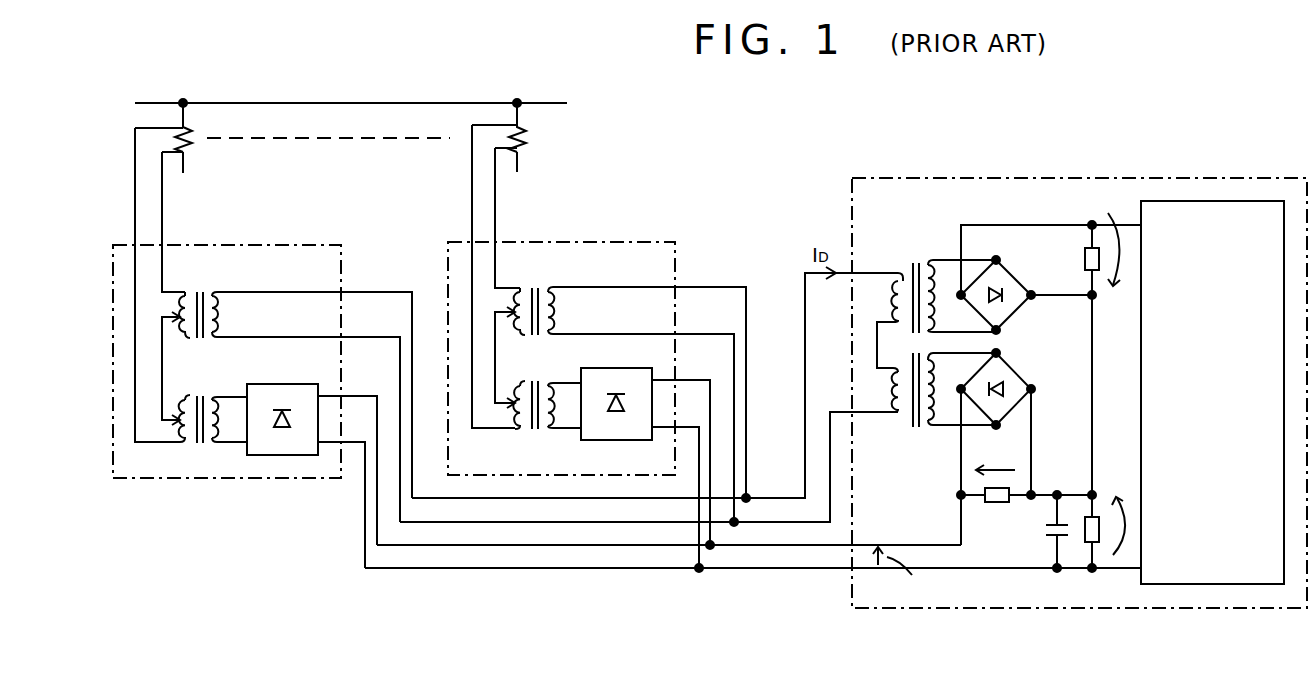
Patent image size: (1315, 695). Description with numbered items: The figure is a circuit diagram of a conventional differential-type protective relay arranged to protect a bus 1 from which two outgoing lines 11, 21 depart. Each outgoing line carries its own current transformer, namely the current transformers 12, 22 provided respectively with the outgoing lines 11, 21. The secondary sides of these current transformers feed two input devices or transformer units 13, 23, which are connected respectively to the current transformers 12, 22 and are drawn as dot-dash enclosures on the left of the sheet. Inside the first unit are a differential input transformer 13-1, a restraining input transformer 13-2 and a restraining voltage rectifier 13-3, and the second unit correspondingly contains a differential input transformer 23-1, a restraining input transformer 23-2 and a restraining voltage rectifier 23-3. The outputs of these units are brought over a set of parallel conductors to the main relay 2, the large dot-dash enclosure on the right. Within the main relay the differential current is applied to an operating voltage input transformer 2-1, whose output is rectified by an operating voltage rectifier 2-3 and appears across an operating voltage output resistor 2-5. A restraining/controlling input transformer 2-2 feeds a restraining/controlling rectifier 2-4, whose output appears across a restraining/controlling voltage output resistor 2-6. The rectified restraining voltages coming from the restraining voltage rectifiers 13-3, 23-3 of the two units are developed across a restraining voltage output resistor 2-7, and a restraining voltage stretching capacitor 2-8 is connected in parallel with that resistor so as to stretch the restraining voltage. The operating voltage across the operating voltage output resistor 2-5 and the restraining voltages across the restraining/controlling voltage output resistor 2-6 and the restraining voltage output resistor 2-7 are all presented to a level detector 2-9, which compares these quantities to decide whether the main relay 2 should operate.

The bus 1 is at (319, 102).
The outgoing line 11 is at (187, 118).
The current transformer 12 is at (187, 153).
The transformer unit 13 is at (262, 348).
The differential input transformer 13-1 is at (199, 292).
The restraining input transformer 13-2 is at (198, 396).
The restraining voltage rectifier 13-3 is at (306, 375).
The outgoing line 21 is at (520, 118).
The current transformer 22 is at (522, 153).
The transformer unit 23 is at (597, 346).
The differential input transformer 23-1 is at (533, 290).
The restraining input transformer 23-2 is at (535, 380).
The restraining voltage rectifier 23-3 is at (619, 441).
The main relay 2 is at (937, 178).
The operating voltage input transformer 2-1 is at (910, 262).
The restraining/controlling input transformer 2-2 is at (921, 427).
The operating voltage rectifier 2-3 is at (1006, 314).
The restraining/controlling rectifier 2-4 is at (1040, 378).
The operating voltage output resistor 2-5 is at (1085, 257).
The restraining/controlling voltage output resistor 2-6 is at (998, 503).
The restraining voltage output resistor 2-7 is at (1088, 545).
The restraining voltage stretching capacitor 2-8 is at (1045, 525).
The level detector 2-9 is at (1192, 200).